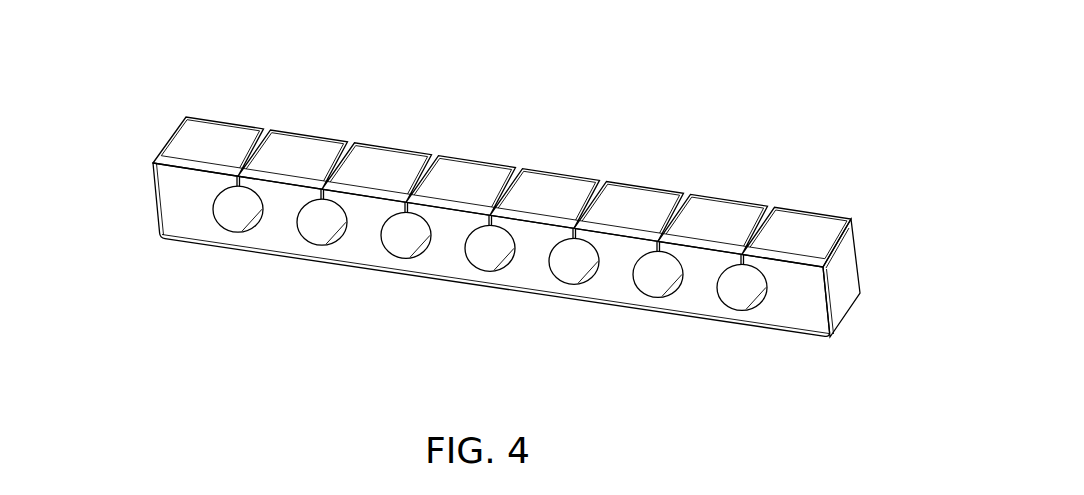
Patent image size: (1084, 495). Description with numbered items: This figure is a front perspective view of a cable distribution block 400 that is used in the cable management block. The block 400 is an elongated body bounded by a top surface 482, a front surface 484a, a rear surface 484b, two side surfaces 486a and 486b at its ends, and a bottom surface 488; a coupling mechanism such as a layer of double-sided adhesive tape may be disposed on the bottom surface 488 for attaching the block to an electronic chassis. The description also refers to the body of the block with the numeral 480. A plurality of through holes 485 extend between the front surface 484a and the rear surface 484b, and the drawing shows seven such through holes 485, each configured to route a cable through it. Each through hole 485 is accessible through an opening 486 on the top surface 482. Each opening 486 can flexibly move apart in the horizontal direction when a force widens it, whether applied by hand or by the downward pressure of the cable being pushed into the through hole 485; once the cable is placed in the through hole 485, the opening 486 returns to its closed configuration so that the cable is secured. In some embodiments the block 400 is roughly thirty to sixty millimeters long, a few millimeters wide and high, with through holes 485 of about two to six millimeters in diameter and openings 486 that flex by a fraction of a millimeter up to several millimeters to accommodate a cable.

The cable distribution block 400 is at (500, 198).
The body 480 is at (500, 230).
The top surface 482 is at (642, 200).
The front surface 484a is at (522, 270).
The rear surface 484b is at (246, 108).
The through holes 485 is at (315, 227).
The opening 486 is at (510, 170).
The side surface 486a is at (150, 180).
The side surface 486b is at (843, 268).
The bottom surface 488 is at (713, 318).